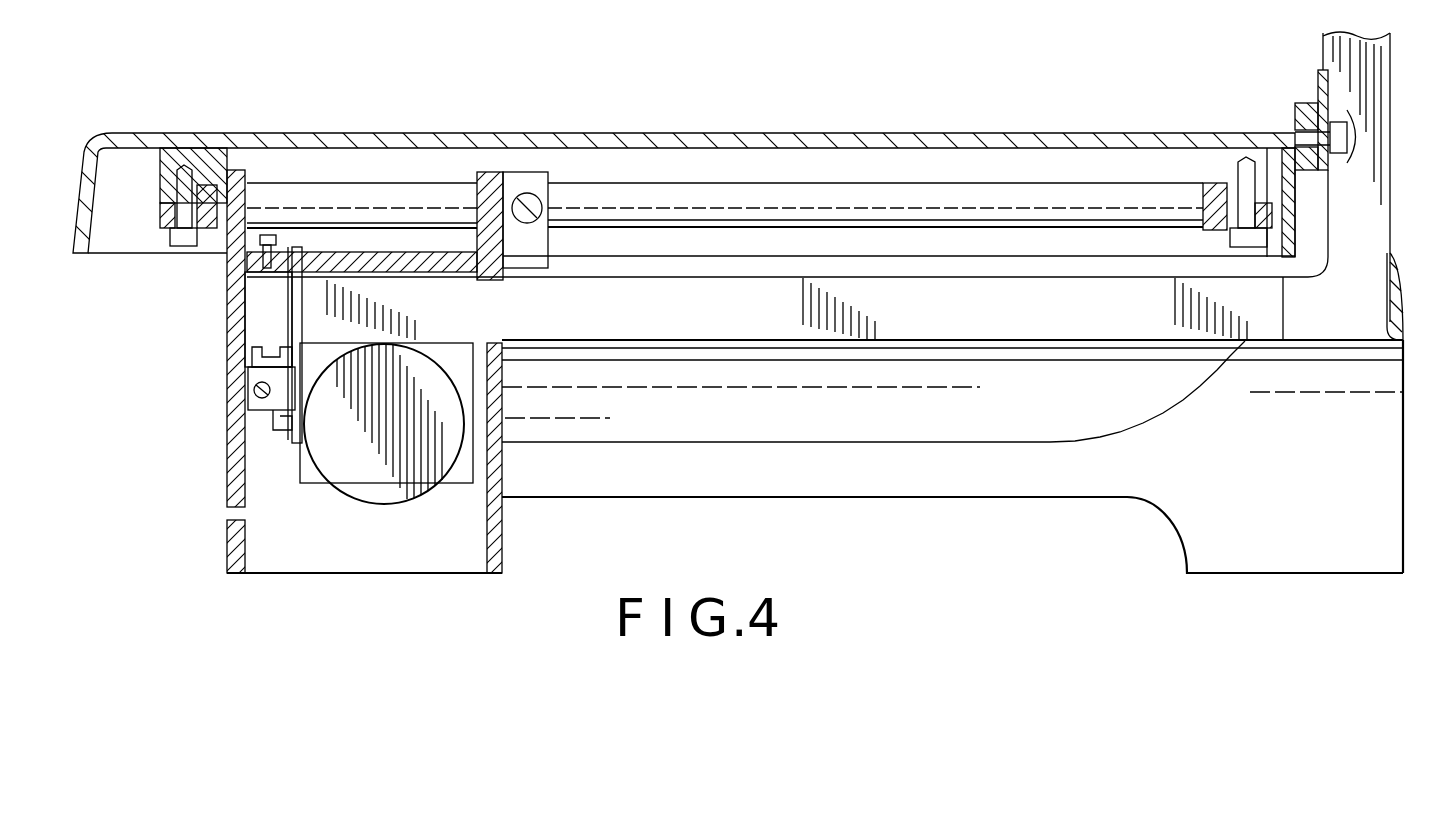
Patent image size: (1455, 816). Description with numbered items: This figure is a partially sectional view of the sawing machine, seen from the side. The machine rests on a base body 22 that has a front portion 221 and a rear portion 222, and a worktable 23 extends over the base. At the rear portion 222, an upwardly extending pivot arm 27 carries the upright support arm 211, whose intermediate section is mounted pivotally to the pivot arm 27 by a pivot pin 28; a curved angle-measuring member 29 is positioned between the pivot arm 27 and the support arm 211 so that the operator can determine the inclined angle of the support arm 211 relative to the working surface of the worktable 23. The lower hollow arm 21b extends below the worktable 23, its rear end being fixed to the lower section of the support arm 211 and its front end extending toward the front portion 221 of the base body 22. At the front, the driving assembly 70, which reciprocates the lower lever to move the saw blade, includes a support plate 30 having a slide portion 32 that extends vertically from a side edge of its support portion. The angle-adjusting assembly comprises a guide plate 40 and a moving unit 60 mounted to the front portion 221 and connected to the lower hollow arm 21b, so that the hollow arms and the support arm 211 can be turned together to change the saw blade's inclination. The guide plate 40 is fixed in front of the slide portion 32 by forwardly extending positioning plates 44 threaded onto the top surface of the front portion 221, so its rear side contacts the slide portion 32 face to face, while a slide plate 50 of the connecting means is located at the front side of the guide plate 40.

The lower hollow arm 21b is at (440, 290).
The base body 22 is at (820, 483).
The worktable 23 is at (762, 134).
The pivot arm 27 is at (1340, 162).
The pivot pin 28 is at (1350, 137).
The angle-measuring member 29 is at (1316, 85).
The upright support arm 211 is at (1386, 70).
The front portion 221 is at (231, 478).
The rear portion 222 is at (1404, 335).
The support plate 30 is at (291, 436).
The slide portion 32 is at (298, 336).
The guide plate 40 is at (276, 303).
The positioning plates 44 is at (290, 252).
The slide plate 50 is at (270, 342).
The moving unit 60 is at (246, 392).
The driving assembly 70 is at (378, 512).